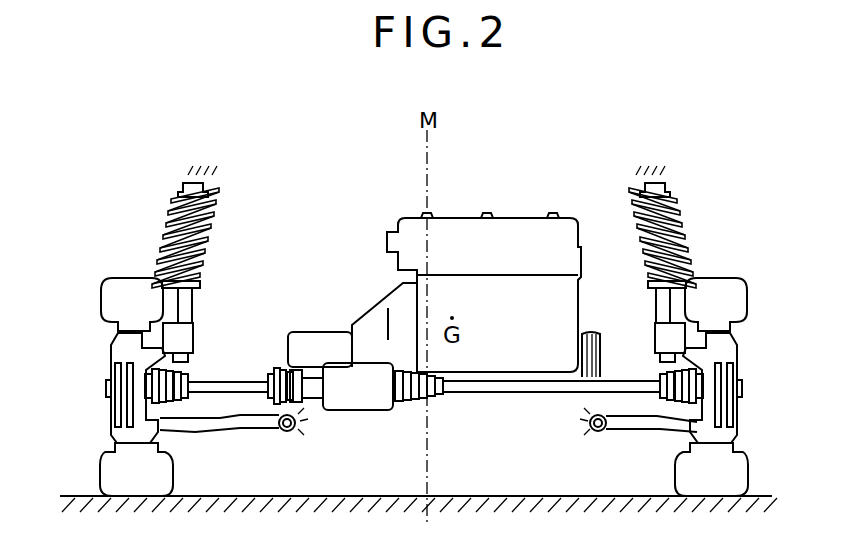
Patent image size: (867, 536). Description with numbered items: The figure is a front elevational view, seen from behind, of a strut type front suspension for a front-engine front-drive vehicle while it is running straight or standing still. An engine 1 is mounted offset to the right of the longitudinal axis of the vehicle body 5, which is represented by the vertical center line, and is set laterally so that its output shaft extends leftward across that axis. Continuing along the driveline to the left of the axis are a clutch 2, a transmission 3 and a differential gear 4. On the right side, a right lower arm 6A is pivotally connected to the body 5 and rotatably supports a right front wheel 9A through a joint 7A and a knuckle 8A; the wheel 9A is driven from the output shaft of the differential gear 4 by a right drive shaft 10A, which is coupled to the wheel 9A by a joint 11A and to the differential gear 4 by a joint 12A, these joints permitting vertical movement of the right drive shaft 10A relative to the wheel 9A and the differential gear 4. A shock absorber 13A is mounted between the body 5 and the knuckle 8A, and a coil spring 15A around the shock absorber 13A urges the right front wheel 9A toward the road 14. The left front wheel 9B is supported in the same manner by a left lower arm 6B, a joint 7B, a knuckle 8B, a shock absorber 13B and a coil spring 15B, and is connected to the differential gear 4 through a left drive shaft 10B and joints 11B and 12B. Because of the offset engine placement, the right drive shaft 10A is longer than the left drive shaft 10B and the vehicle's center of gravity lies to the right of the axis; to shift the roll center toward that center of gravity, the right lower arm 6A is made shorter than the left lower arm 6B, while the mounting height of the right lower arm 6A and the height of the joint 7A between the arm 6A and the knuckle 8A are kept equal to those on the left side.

The engine 1 is at (520, 228).
The clutch 2 is at (375, 310).
The transmission 3 is at (317, 333).
The differential gear 4 is at (362, 400).
The body 5 is at (213, 167).
The right lower arm 6A is at (637, 432).
The left lower arm 6B is at (227, 431).
The joint 7A is at (728, 432).
The joint 7B is at (113, 436).
The knuckle 8A is at (700, 352).
The knuckle 8B is at (153, 353).
The right front wheel 9A is at (733, 287).
The left front wheel 9B is at (110, 298).
The right drive shaft 10A is at (534, 393).
The left drive shaft 10B is at (240, 393).
The joint 11A is at (661, 368).
The joint 11B is at (186, 372).
The joint 12A is at (433, 374).
The joint 12B is at (280, 367).
The shock absorber 13A is at (667, 218).
The shock absorber 13B is at (163, 225).
The road 14 is at (493, 494).
The coil spring 15A is at (688, 228).
The coil spring 15B is at (158, 238).